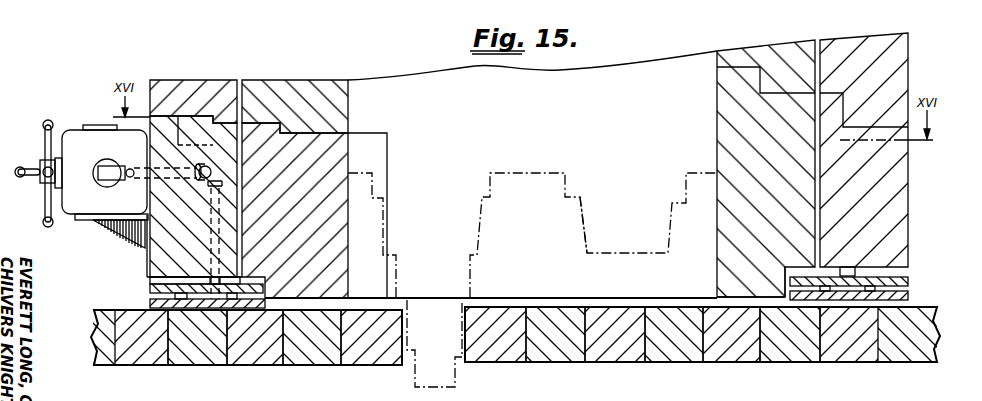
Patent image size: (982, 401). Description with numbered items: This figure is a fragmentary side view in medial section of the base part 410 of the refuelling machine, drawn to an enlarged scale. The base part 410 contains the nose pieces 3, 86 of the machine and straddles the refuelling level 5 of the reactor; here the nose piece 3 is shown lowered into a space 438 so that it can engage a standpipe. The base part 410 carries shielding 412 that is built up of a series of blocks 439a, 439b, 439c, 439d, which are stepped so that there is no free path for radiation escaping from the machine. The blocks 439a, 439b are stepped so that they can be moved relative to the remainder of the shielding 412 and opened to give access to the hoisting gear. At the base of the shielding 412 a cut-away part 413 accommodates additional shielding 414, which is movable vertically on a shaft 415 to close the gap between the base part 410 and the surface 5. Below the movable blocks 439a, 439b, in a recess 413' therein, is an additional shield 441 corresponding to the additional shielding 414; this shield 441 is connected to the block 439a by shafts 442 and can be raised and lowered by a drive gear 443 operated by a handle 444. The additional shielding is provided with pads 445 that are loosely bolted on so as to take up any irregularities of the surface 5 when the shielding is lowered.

The nose piece 3 is at (479, 238).
The refuelling level 5 is at (317, 310).
The nose piece 86 is at (582, 228).
The base part 410 is at (738, 85).
The shielding 412 is at (798, 240).
The cut-away part 413 is at (759, 336).
The recess 413' is at (248, 347).
The additional shielding 414 is at (905, 281).
The shaft 415 is at (857, 271).
The space 438 is at (403, 360).
The block 439a is at (160, 249).
The block 439b is at (340, 140).
The block 439c is at (727, 127).
The block 439d is at (887, 225).
The additional shield 441 is at (150, 289).
The shafts 442 is at (212, 280).
The drive gear 443 is at (90, 203).
The handle 444 is at (49, 196).
The pads 445 is at (895, 300).